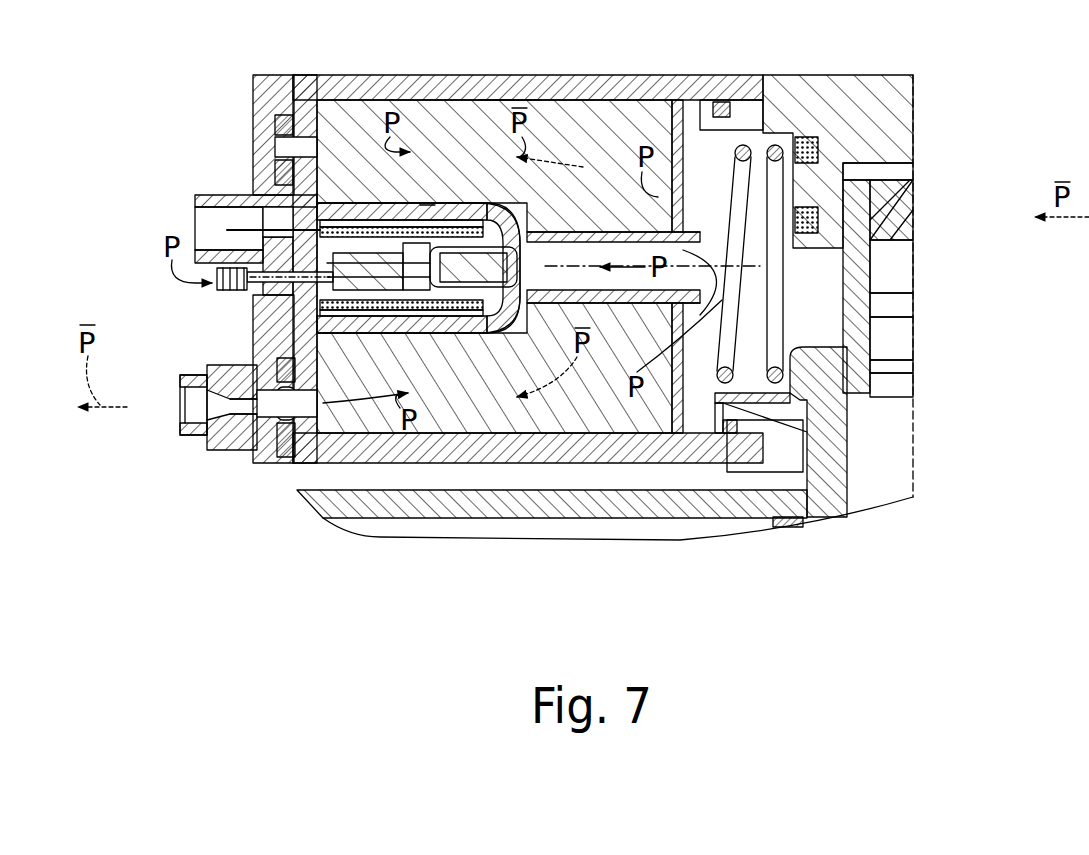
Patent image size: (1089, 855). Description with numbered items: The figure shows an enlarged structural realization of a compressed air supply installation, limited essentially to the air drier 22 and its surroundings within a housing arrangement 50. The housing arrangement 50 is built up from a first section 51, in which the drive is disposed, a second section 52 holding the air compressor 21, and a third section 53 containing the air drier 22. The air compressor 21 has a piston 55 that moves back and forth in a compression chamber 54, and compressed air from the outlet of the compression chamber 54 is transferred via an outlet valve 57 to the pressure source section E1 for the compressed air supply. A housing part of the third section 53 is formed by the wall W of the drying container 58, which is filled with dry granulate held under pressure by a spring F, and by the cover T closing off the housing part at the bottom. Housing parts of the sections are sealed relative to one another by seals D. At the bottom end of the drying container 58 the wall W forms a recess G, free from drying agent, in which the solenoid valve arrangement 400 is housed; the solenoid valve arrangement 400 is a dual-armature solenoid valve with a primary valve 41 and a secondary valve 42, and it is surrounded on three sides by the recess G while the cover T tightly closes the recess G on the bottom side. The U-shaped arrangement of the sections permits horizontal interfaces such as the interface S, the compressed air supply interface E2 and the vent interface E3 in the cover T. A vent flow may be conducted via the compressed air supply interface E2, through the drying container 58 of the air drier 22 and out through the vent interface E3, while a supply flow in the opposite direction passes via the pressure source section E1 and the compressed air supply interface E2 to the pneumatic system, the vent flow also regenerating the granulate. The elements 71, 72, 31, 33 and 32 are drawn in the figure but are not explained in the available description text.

The cover T is at (252, 90).
The air drier 22 is at (570, 100).
The wall W is at (505, 100).
The port 71 is at (277, 128).
The seal 72 is at (277, 147).
The horizontal interface S is at (227, 230).
The vent interface E3 is at (260, 296).
The fitting body 31 is at (250, 362).
The compressed air supply interface E2 is at (176, 437).
The third section 53 is at (487, 183).
The recess G is at (427, 205).
The primary valve 41 is at (517, 230).
The solenoid valve arrangement 400 is at (427, 203).
The secondary valve 42 is at (362, 206).
The bore 33 is at (527, 303).
The lower piston body 32 is at (398, 330).
The drying container 58 is at (677, 117).
The seal D is at (700, 105).
The spring F is at (748, 145).
The outlet valve 57 is at (818, 118).
The pressure source section E1 is at (812, 115).
The compression chamber 54 is at (922, 175).
The piston 55 is at (917, 233).
The air compressor 21 is at (897, 307).
The second section 52 is at (903, 492).
The first section 51 is at (442, 583).
The housing arrangement 50 is at (630, 510).